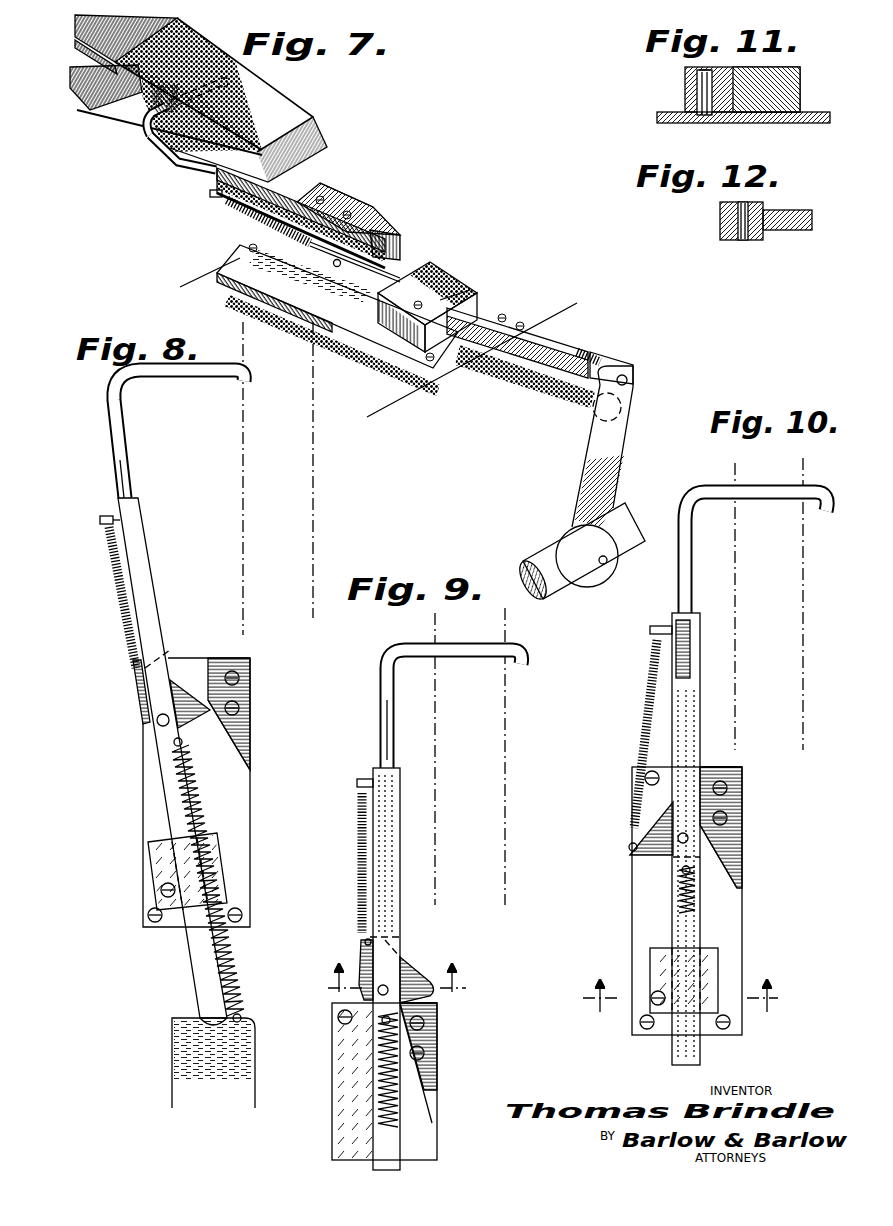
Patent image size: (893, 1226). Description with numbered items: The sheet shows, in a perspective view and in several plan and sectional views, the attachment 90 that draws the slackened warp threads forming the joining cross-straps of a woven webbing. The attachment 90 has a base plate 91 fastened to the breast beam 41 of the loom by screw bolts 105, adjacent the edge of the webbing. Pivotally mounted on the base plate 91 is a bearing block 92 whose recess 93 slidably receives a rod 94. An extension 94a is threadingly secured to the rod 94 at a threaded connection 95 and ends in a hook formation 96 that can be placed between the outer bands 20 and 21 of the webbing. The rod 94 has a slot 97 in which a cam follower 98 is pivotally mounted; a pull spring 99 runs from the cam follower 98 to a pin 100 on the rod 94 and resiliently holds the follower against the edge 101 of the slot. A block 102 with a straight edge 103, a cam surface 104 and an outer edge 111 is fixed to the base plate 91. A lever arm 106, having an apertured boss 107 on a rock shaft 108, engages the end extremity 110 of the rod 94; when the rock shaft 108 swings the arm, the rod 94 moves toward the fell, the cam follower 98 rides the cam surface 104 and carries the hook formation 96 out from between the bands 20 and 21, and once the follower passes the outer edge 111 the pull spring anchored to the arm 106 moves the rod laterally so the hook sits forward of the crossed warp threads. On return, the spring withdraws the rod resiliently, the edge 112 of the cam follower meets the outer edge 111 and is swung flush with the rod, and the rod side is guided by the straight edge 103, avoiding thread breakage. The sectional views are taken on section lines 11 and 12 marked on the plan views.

In FIG. 7, the outer band 20 is at (298, 110).
In FIG. 8, the outer band 20 is at (318, 540).
In FIG. 9, the outer band 20 is at (495, 733).
In FIG. 10, the outer band 20 is at (798, 643).
In FIG. 7, the outer band 21 is at (305, 147).
In FIG. 7, the breast beam 41 is at (415, 398).
In FIG. 7, the attachment 90 is at (497, 306).
In FIG. 7, the base plate 91 is at (250, 244).
In FIG. 8, the base plate 91 is at (247, 818).
In FIG. 9, the base plate 91 is at (340, 1105).
In FIG. 10, the base plate 91 is at (687, 901).
In FIG. 11, the base plate 91 is at (811, 125).
In FIG. 7, the bearing block 92 is at (452, 280).
In FIG. 8, the bearing block 92 is at (160, 866).
In FIG. 10, the bearing block 92 is at (718, 966).
In FIG. 11, the bearing block 92 is at (790, 70).
In FIG. 7, the recess 93 is at (483, 283).
In FIG. 7, the rod 94 is at (290, 186).
In FIG. 8, the rod 94 is at (146, 540).
In FIG. 9, the rod 94 is at (378, 1128).
In FIG. 10, the rod 94 is at (700, 929).
In FIG. 11, the rod 94 is at (790, 92).
In FIG. 12, the rod 94 is at (750, 205).
In FIG. 7, the extension 94a is at (180, 165).
In FIG. 8, the extension 94a is at (130, 446).
In FIG. 9, the extension 94a is at (382, 700).
In FIG. 10, the extension 94a is at (682, 906).
In FIG. 10, the threaded connection 95 is at (700, 637).
In FIG. 7, the hook formation 96 is at (196, 93).
In FIG. 8, the hook formation 96 is at (192, 380).
In FIG. 9, the hook formation 96 is at (474, 660).
In FIG. 10, the hook formation 96 is at (773, 500).
In FIG. 8, the slot 97 is at (180, 680).
In FIG. 7, the cam follower 98 is at (345, 273).
In FIG. 8, the cam follower 98 is at (142, 704).
In FIG. 9, the cam follower 98 is at (373, 970).
In FIG. 12, the cam follower 98 is at (795, 232).
In FIG. 7, the pull spring 99 is at (228, 214).
In FIG. 8, the pull spring 99 is at (116, 596).
In FIG. 9, the pull spring 99 is at (358, 840).
In FIG. 10, the pull spring 99 is at (640, 741).
In FIG. 7, the pin 100 is at (210, 194).
In FIG. 8, the pin 100 is at (104, 516).
In FIG. 9, the pin 100 is at (357, 783).
In FIG. 10, the pin 100 is at (661, 630).
In FIG. 8, the edge of the recess 101 is at (165, 665).
In FIG. 7, the block 102 is at (366, 210).
In FIG. 8, the block 102 is at (252, 706).
In FIG. 9, the block 102 is at (437, 1062).
In FIG. 10, the block 102 is at (745, 798).
In FIG. 7, the straight edge 103 is at (336, 184).
In FIG. 7, the cam surface 104 is at (402, 230).
In FIG. 8, the cam surface 104 is at (255, 755).
In FIG. 9, the cam surface 104 is at (425, 1110).
In FIG. 10, the cam surface 104 is at (740, 859).
In FIG. 7, the screw bolts 105 is at (240, 252).
In FIG. 8, the screw bolts 105 is at (147, 924).
In FIG. 10, the screw bolts 105 is at (685, 1022).
In FIG. 7, the lever arm 106 is at (580, 472).
In FIG. 8, the lever arm 106 is at (172, 1048).
In FIG. 7, the apertured boss 107 is at (602, 574).
In FIG. 7, the rock shaft 108 is at (566, 584).
In FIG. 7, the end extremity 110 is at (620, 405).
In FIG. 8, the outer edge 111 is at (237, 661).
In FIG. 9, the outer edge 111 is at (407, 1000).
In FIG. 10, the outer edge 111 is at (710, 769).
In FIG. 9, the edge of the cam follower 112 is at (432, 1004).
In FIG. 10, the edge of the cam follower 112 is at (655, 859).
In FIG. 10, the section line 11— 11 is at (686, 998).
In FIG. 9, the section line 12— 12 is at (395, 983).